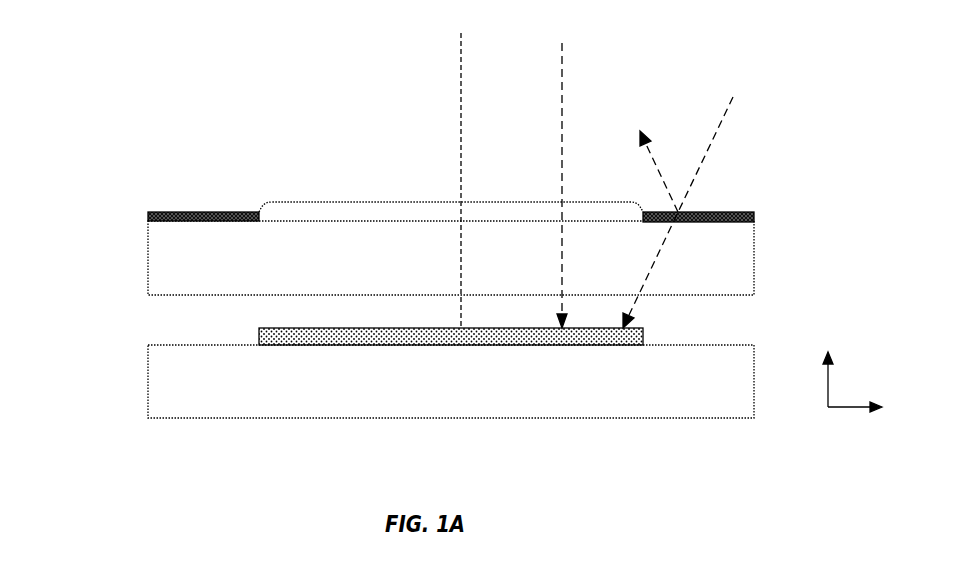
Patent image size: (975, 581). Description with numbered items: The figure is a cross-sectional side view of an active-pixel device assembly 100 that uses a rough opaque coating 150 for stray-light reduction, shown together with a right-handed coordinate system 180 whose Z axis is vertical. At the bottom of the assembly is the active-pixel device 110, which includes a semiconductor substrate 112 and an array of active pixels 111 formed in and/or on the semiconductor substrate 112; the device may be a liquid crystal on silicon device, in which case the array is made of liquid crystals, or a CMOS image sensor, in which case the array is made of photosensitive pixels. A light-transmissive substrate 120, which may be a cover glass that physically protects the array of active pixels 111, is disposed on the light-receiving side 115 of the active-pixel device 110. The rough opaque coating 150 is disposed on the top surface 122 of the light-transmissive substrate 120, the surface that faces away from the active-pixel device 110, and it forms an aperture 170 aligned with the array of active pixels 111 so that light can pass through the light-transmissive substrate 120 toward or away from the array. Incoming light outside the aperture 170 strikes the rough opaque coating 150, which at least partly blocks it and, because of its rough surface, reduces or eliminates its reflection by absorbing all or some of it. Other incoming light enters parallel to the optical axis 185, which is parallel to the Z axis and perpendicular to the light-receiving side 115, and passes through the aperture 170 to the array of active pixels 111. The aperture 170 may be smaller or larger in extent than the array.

The active-pixel device assembly 100 is at (123, 70).
The active-pixel device 110 is at (135, 321).
The array of active pixels 111 is at (259, 338).
The semiconductor substrate 112 is at (190, 407).
The light-receiving side 115 is at (710, 333).
The light-transmissive substrate 120 is at (190, 282).
The top surface 122 is at (300, 203).
The rough opaque coating 150 is at (205, 211).
The aperture 170 is at (388, 202).
The right-handed coordinate system 180 is at (847, 451).
The optical axis 185 is at (463, 181).